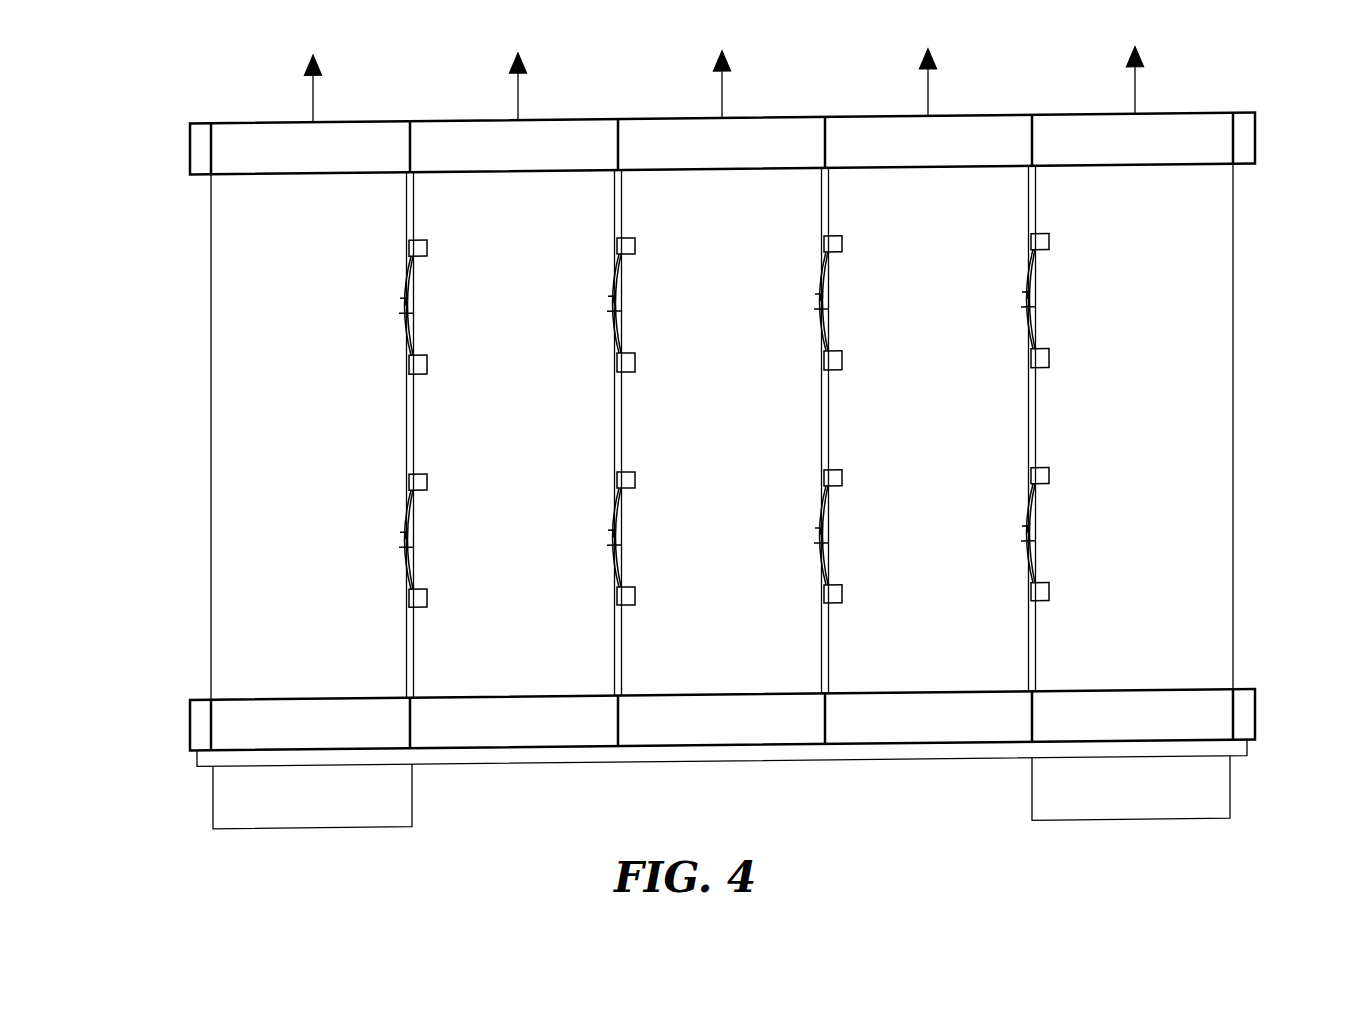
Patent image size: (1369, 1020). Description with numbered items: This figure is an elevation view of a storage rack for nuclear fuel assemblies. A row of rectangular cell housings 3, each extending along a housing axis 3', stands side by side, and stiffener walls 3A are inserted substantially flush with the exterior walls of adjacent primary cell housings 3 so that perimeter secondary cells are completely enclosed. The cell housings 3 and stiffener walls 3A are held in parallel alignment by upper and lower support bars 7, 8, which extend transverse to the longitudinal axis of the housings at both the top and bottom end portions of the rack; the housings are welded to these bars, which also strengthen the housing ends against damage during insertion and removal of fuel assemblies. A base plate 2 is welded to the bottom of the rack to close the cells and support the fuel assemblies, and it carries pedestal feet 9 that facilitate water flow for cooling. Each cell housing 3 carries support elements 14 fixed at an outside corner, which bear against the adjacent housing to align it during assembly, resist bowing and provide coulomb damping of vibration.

The base plate 2 is at (760, 753).
The cell housing 3 is at (776, 431).
The stiffener wall 3A is at (561, 666).
The housing axis 3' is at (767, 78).
The support bar 7 is at (191, 138).
The support bar 8 is at (1205, 152).
The pedestal feet 9 is at (380, 788).
The support element 14 is at (1074, 528).